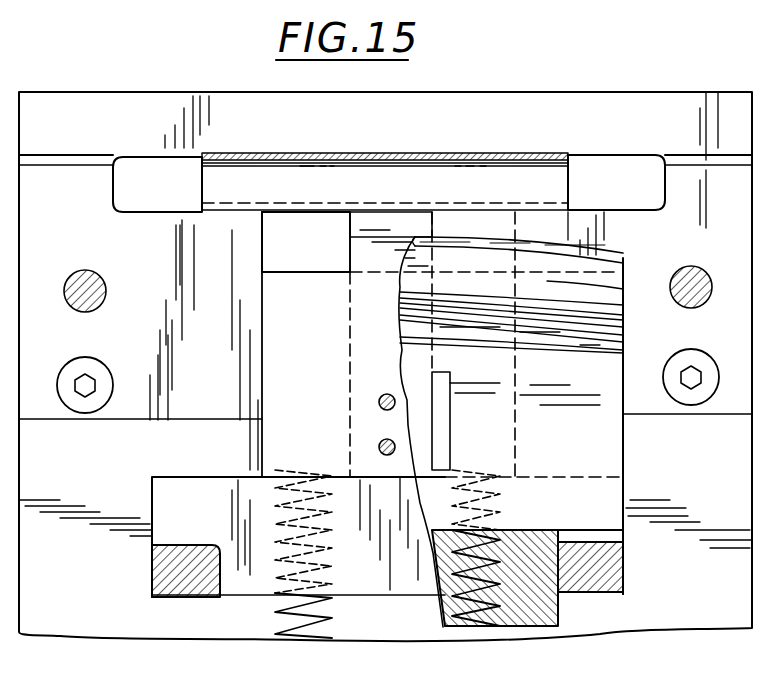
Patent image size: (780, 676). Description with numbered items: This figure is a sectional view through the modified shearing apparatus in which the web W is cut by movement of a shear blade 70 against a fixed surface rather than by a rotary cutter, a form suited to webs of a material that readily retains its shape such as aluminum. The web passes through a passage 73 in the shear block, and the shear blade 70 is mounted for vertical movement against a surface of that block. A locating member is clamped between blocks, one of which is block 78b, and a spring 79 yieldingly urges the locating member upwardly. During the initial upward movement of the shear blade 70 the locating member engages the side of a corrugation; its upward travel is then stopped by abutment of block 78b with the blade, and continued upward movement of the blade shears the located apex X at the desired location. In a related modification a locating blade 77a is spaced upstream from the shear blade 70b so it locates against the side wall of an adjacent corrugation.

The located apex X is at (415, 152).
The web W is at (533, 152).
The passage 73 is at (628, 160).
The locating blade 77a is at (350, 241).
The shear blade 70 is at (612, 278).
The block 78b is at (420, 438).
The shear blade 70b is at (603, 497).
The spring 79 is at (330, 622).